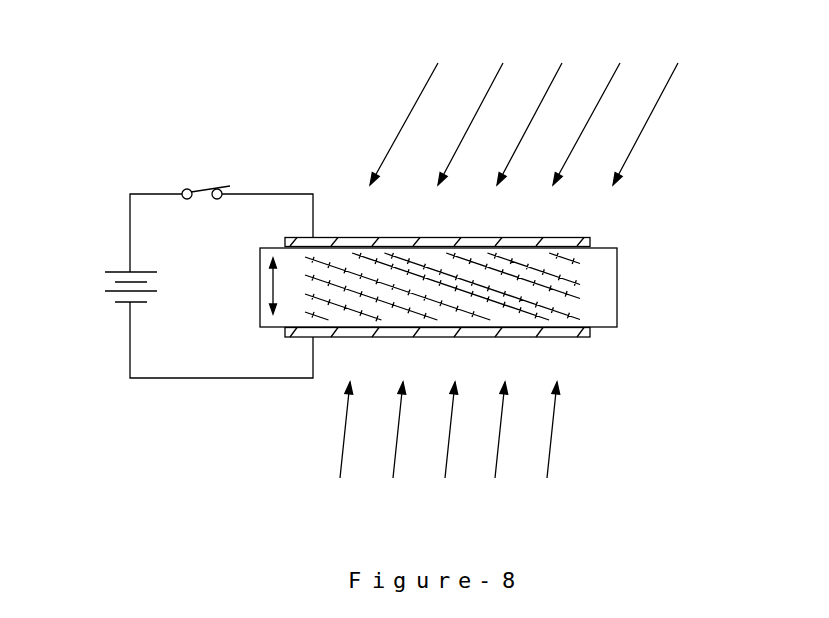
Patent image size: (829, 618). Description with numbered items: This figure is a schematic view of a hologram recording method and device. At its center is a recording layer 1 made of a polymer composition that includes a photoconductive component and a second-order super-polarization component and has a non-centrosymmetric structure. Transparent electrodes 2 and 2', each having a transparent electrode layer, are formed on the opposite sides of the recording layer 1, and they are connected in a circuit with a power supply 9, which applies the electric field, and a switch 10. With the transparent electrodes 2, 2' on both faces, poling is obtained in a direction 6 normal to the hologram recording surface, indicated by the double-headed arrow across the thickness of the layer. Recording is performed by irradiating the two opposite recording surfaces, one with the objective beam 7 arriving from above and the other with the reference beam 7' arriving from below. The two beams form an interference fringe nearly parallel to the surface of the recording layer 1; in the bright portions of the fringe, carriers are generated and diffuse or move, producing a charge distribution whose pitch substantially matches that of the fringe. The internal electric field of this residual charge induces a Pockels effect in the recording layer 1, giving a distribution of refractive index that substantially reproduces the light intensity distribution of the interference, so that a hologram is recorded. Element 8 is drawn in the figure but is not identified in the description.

The recording layer 1 is at (618, 280).
The transparent electrode 2 is at (478, 225).
The transparent electrode 2' is at (484, 351).
The poling direction 6 is at (270, 290).
The objective beam 7 is at (531, 94).
The reference beam 7' is at (445, 458).
The aligned molecules 8 is at (518, 313).
The power supply 9 is at (96, 288).
The switch 10 is at (202, 185).